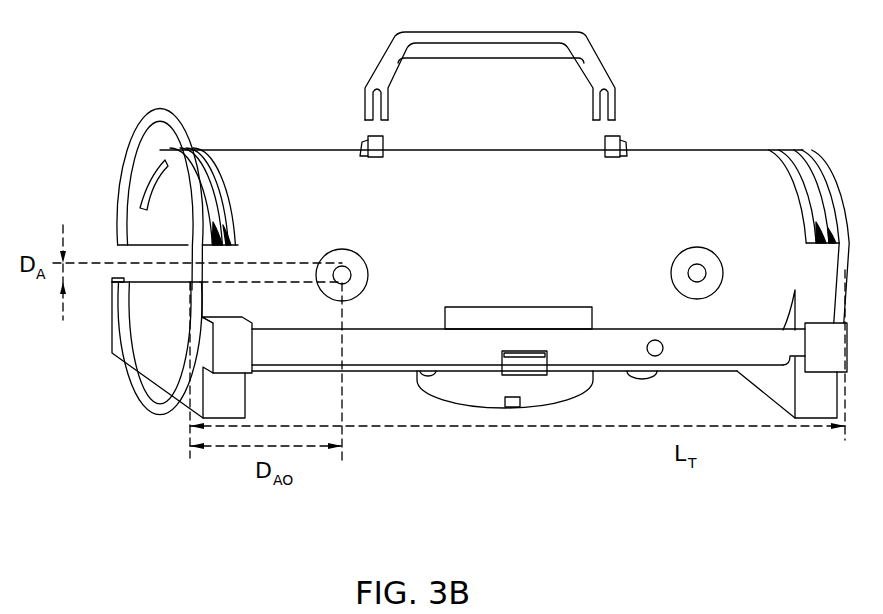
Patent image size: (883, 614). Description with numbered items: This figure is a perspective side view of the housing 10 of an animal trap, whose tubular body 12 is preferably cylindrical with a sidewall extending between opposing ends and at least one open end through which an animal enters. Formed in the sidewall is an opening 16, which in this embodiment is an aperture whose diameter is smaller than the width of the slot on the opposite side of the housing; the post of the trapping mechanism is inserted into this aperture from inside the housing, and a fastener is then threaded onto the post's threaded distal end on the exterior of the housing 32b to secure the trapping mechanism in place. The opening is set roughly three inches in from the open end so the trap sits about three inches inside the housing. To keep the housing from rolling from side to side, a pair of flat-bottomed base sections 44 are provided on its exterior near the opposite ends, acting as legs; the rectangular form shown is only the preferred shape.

The housing 10 is at (137, 141).
The tubular body 12 is at (745, 128).
The opening 16 is at (342, 265).
The exterior of the housing 32b is at (277, 178).
The base section 44 is at (112, 355).